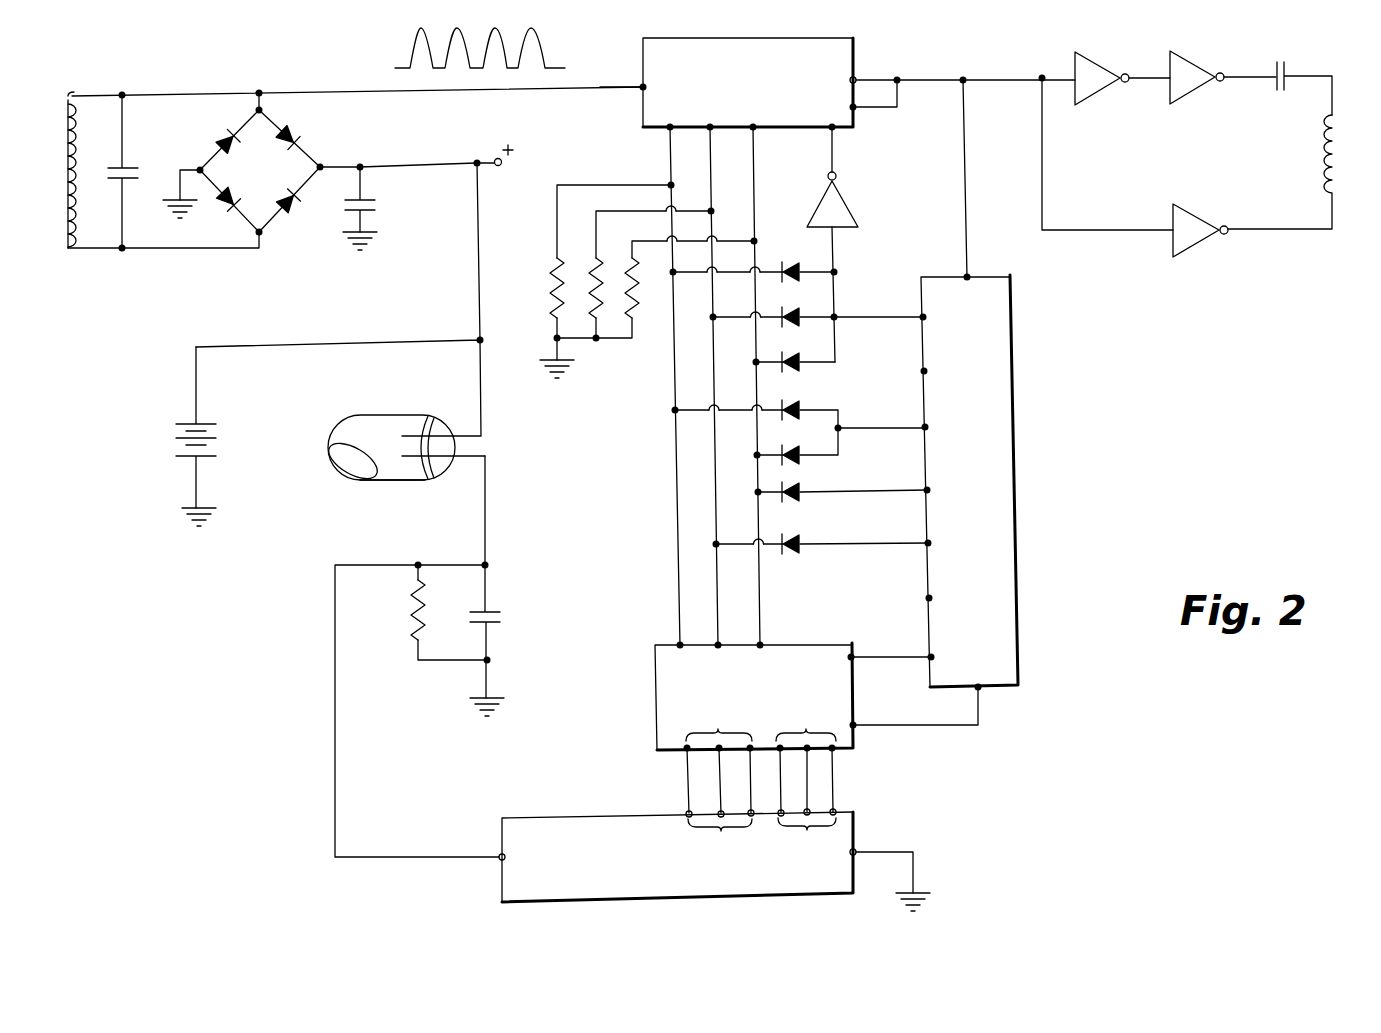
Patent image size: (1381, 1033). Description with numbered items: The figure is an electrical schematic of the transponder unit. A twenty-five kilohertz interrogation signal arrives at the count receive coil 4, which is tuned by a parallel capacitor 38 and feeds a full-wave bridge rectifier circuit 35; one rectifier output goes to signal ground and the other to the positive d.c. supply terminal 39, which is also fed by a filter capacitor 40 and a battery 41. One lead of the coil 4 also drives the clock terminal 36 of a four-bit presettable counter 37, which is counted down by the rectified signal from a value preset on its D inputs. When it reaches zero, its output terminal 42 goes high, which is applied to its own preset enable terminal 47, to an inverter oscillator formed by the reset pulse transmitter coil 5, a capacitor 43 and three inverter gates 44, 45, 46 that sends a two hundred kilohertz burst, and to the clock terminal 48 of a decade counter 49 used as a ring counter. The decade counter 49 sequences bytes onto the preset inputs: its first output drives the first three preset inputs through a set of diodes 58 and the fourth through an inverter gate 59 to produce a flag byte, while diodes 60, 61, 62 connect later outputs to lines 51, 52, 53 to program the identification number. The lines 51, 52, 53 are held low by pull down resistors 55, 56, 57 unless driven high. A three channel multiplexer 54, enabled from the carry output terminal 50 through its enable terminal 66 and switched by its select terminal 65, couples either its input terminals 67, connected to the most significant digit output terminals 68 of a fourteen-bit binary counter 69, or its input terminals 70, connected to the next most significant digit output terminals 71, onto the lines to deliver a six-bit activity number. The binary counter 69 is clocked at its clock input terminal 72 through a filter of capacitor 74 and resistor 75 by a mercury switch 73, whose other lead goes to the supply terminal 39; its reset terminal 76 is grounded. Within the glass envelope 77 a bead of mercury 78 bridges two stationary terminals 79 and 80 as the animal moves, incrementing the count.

The count receive coil 4 is at (66, 110).
The reset pulse transmitter coil 5 is at (1327, 142).
The full-wave bridge rectifier circuit 35 is at (273, 182).
The clock terminal 36 is at (643, 86).
The four-bit presettable counter 37 is at (757, 38).
The capacitor 38 is at (128, 170).
The positive d.c. supply terminal 39 is at (495, 160).
The filter capacitor 40 is at (372, 202).
The battery 41 is at (217, 424).
The output terminal 42 is at (858, 78).
The capacitor 43 is at (1285, 62).
The inverter gate 44 is at (1098, 62).
The inverter gate 45 is at (1195, 62).
The inverter gate 46 is at (1200, 212).
The preset enable terminal 47 is at (858, 108).
The clock terminal 48 is at (968, 275).
The decade counter 49 is at (1012, 340).
The carry output terminal 50 is at (982, 690).
The line 51 is at (678, 578).
The line 52 is at (722, 592).
The line 53 is at (762, 593).
The multiplexer 54 is at (656, 695).
The pull down resistor 55 is at (556, 262).
The pull down resistor 56 is at (596, 258).
The pull down resistor 57 is at (630, 258).
The diodes 58 is at (842, 328).
The inverter gate 59 is at (845, 205).
The diodes 60 is at (844, 418).
The diode 61 is at (810, 484).
The diode 62 is at (806, 534).
The select terminal 65 is at (853, 655).
The enable terminal 66 is at (856, 728).
The input terminals 67 is at (806, 758).
The most significant digit output terminals 68 is at (807, 831).
The fourteen-bit binary counter 69 is at (732, 897).
The input terminals 70 is at (719, 758).
The next most significant digit output terminals 71 is at (720, 832).
The clock input terminal 72 is at (500, 860).
The mercury switch 73 is at (404, 451).
The capacitor 74 is at (500, 612).
The resistor 75 is at (412, 615).
The reset terminal 76 is at (856, 850).
The glass envelope 77 is at (392, 481).
The bead of mercury 78 is at (372, 478).
The stationary terminal 79 is at (425, 416).
The stationary terminal 80 is at (430, 480).